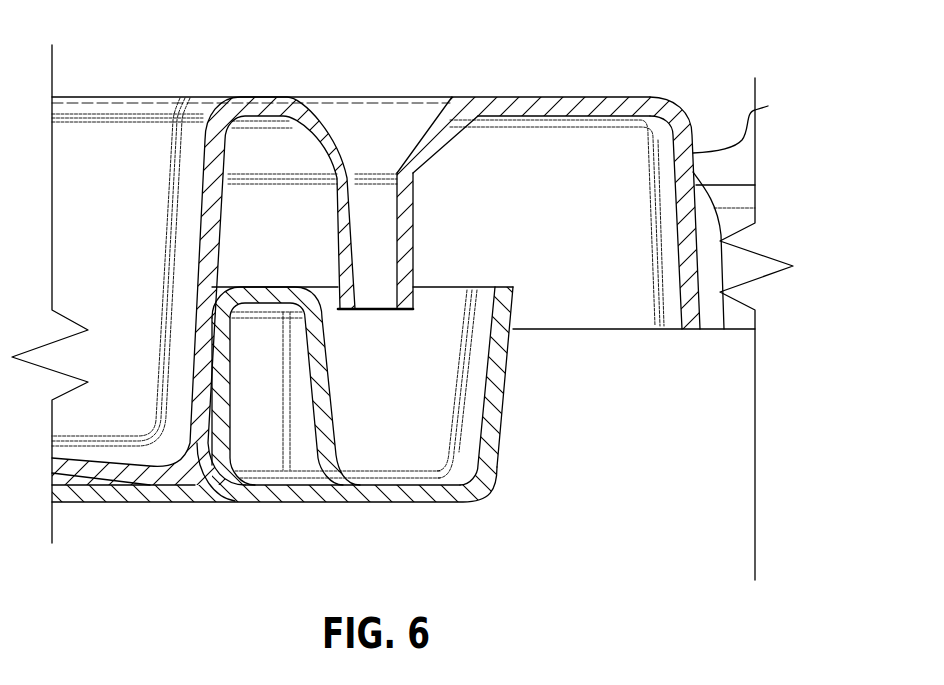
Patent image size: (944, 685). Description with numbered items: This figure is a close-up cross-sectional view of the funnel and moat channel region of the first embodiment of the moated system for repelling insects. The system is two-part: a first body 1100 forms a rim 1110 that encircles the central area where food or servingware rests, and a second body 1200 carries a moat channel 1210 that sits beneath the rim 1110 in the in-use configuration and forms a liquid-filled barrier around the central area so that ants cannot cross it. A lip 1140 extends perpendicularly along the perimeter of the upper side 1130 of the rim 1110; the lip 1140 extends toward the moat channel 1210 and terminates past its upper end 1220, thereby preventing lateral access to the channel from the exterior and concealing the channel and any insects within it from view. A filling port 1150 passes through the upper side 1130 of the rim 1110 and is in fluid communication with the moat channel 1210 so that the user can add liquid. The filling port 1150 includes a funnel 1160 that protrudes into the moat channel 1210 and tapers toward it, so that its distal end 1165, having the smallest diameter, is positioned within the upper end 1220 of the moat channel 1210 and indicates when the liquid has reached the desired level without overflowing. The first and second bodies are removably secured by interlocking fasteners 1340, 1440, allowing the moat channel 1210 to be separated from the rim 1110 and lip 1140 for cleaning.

The first body 1100 is at (258, 100).
The rim 1110 is at (563, 97).
The upper side 1130 is at (645, 97).
The lip 1140 is at (768, 106).
The filling port 1150 is at (415, 97).
The funnel 1160 is at (412, 220).
The distal end 1165 is at (348, 310).
The second body 1200 is at (153, 507).
The moat channel 1210 is at (437, 458).
The upper end 1220 is at (513, 287).
The interlocking fastener 1340 is at (218, 367).
The interlocking fastener 1440 is at (227, 397).